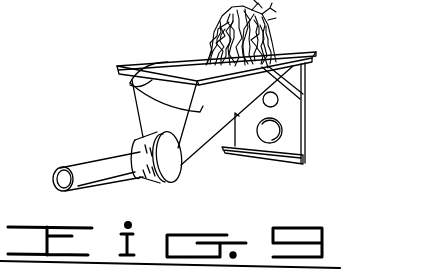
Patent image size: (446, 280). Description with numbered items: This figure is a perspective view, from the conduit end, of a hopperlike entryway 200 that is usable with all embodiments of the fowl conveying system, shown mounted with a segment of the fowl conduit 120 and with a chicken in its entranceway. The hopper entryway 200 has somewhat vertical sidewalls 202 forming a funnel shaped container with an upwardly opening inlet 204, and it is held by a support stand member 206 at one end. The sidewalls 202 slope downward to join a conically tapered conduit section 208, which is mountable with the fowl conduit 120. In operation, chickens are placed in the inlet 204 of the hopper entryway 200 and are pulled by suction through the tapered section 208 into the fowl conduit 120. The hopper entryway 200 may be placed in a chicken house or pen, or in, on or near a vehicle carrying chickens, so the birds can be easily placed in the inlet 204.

The hopper entryway 200 is at (82, 101).
The sidewalls 202 is at (130, 82).
The inlet 204 is at (173, 50).
The support stand member 206 is at (297, 124).
The conically tapered conduit section 208 is at (163, 181).
The fowl conduit 120 is at (85, 166).